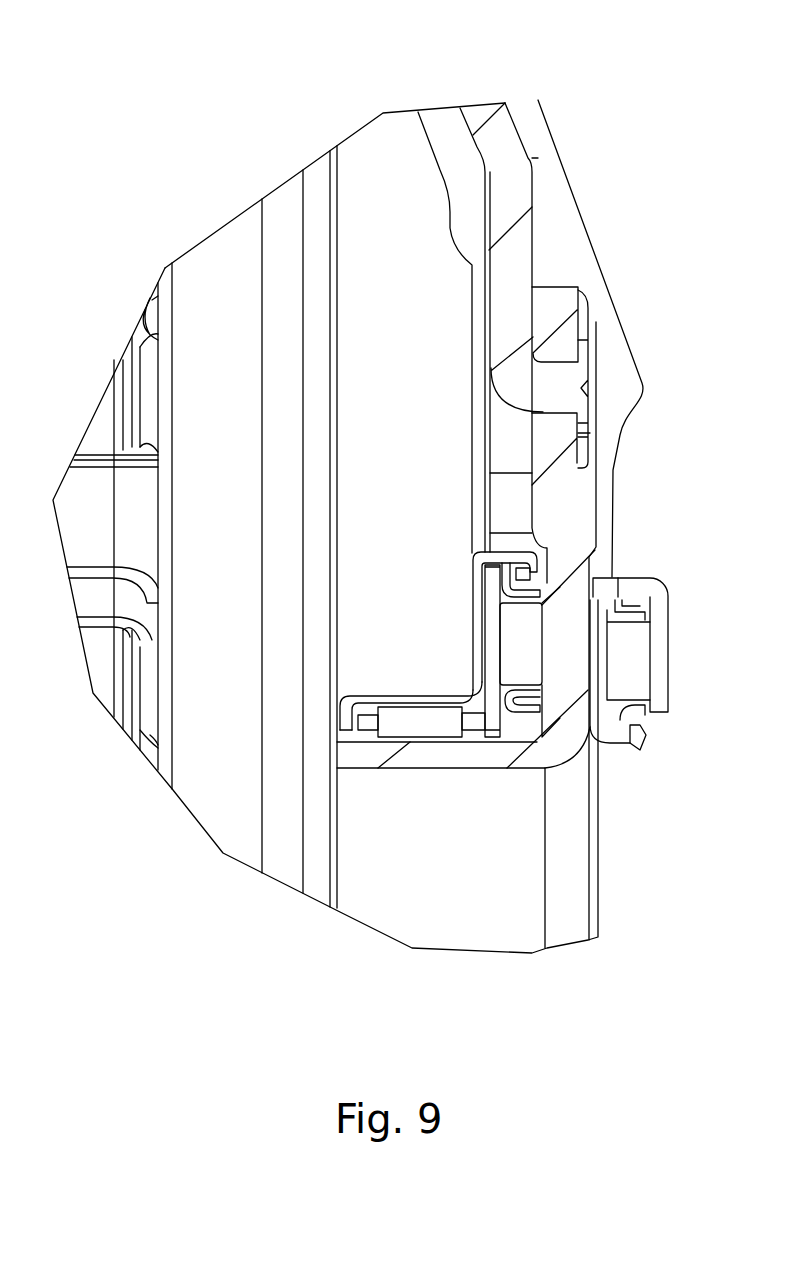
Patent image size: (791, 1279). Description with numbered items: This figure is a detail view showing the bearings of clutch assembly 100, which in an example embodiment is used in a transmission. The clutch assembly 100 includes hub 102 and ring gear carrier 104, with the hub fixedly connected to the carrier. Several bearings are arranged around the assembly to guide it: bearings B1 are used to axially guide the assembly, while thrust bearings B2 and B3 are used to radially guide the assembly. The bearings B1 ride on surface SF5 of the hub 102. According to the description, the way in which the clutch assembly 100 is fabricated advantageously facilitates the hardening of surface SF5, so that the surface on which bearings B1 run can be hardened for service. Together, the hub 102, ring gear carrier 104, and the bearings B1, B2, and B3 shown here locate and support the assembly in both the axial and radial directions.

The clutch assembly 100 is at (602, 75).
The hub 102 is at (559, 287).
The ring gear carrier 104 is at (535, 157).
The bearings B1 is at (413, 705).
The thrust bearing B2 is at (478, 585).
The thrust bearing B3 is at (637, 587).
The surface of the hub SF5 is at (418, 740).